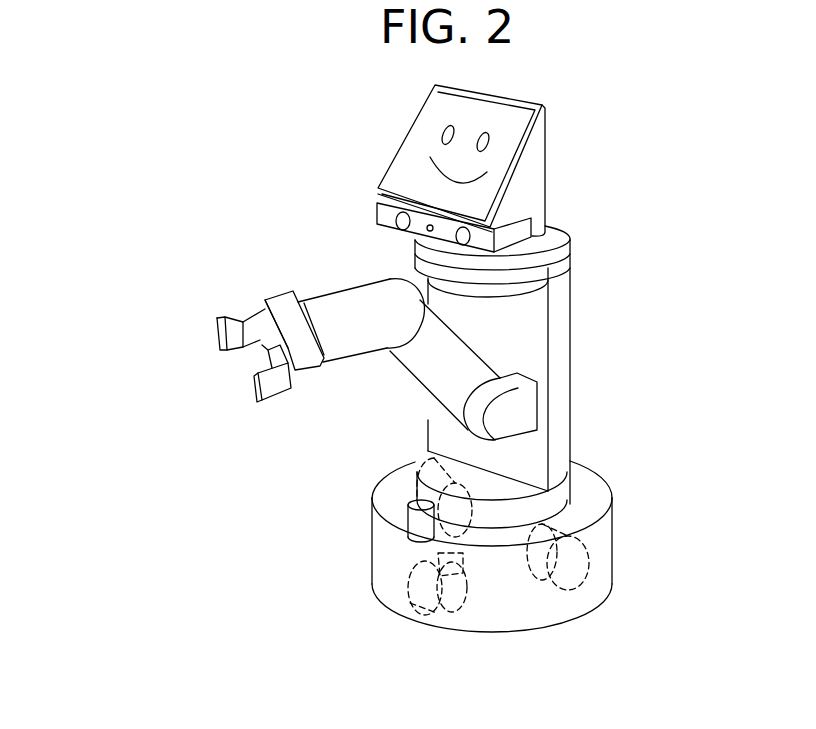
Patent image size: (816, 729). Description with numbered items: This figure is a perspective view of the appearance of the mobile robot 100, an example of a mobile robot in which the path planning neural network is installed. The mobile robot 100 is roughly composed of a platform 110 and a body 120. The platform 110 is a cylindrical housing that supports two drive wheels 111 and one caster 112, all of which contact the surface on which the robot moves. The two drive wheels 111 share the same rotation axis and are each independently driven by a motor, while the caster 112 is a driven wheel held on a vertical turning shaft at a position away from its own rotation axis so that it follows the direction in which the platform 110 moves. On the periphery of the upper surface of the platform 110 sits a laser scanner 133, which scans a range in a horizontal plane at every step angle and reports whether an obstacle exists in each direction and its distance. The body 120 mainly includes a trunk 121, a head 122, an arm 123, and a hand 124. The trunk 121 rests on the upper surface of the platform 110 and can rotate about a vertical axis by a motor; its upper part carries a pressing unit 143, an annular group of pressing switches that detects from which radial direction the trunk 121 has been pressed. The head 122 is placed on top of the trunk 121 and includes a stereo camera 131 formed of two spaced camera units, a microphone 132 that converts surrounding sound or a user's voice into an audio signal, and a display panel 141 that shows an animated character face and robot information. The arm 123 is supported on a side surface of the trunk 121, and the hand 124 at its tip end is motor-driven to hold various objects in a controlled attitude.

The mobile robot 100 is at (243, 81).
The platform 110 is at (684, 462).
The drive wheels 111 is at (392, 498).
The caster 112 is at (452, 615).
The body 120 is at (684, 80).
The trunk 121 is at (566, 397).
The head 122 is at (533, 187).
The arm 123 is at (430, 365).
The hand 124 is at (277, 397).
The stereo camera 131 is at (386, 241).
The microphone 132 is at (428, 230).
The laser scanner 133 is at (413, 527).
The display panel 141 is at (433, 108).
The pressing unit 143 is at (553, 285).